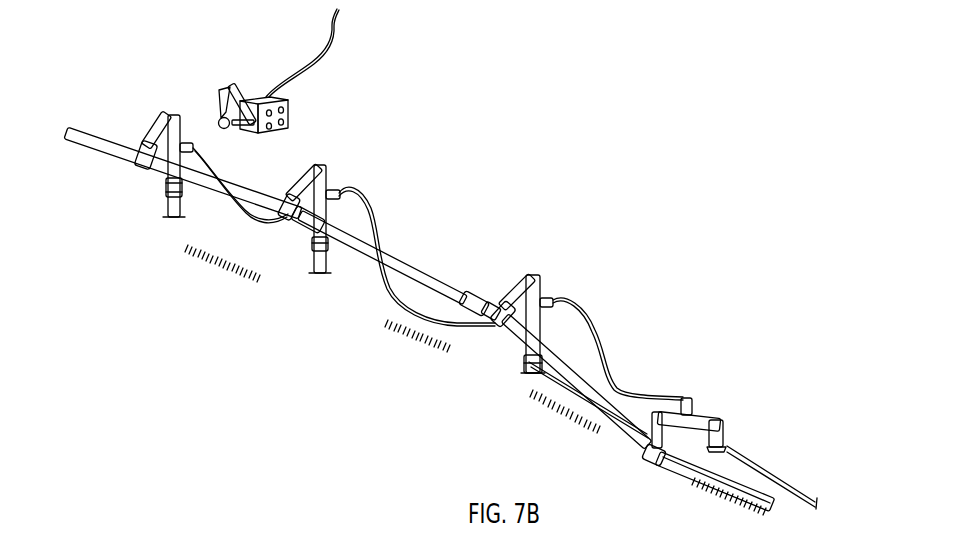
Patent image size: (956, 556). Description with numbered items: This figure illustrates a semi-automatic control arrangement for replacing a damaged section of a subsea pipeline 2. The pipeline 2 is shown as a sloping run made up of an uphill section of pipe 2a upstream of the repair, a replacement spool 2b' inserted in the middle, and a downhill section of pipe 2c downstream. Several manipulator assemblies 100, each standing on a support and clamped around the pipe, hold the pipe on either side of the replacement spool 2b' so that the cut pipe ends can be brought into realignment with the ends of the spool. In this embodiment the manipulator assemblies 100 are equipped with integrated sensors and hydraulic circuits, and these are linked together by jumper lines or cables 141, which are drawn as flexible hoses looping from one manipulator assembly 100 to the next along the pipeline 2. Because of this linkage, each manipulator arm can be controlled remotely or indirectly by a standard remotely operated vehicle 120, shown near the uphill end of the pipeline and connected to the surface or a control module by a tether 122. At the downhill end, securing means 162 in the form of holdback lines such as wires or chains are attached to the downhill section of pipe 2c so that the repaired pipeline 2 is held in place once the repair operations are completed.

The pipeline 2 is at (493, 375).
The uphill section of pipe 2a is at (203, 181).
The replacement spool 2b' is at (395, 262).
The downhill section of pipe 2c is at (610, 423).
The manipulator assembly 100 is at (148, 130).
The remotely operated vehicle 120 is at (287, 113).
The tether 122 is at (330, 47).
The jumper lines or cables 141 is at (198, 152).
The securing means 162 is at (640, 422).